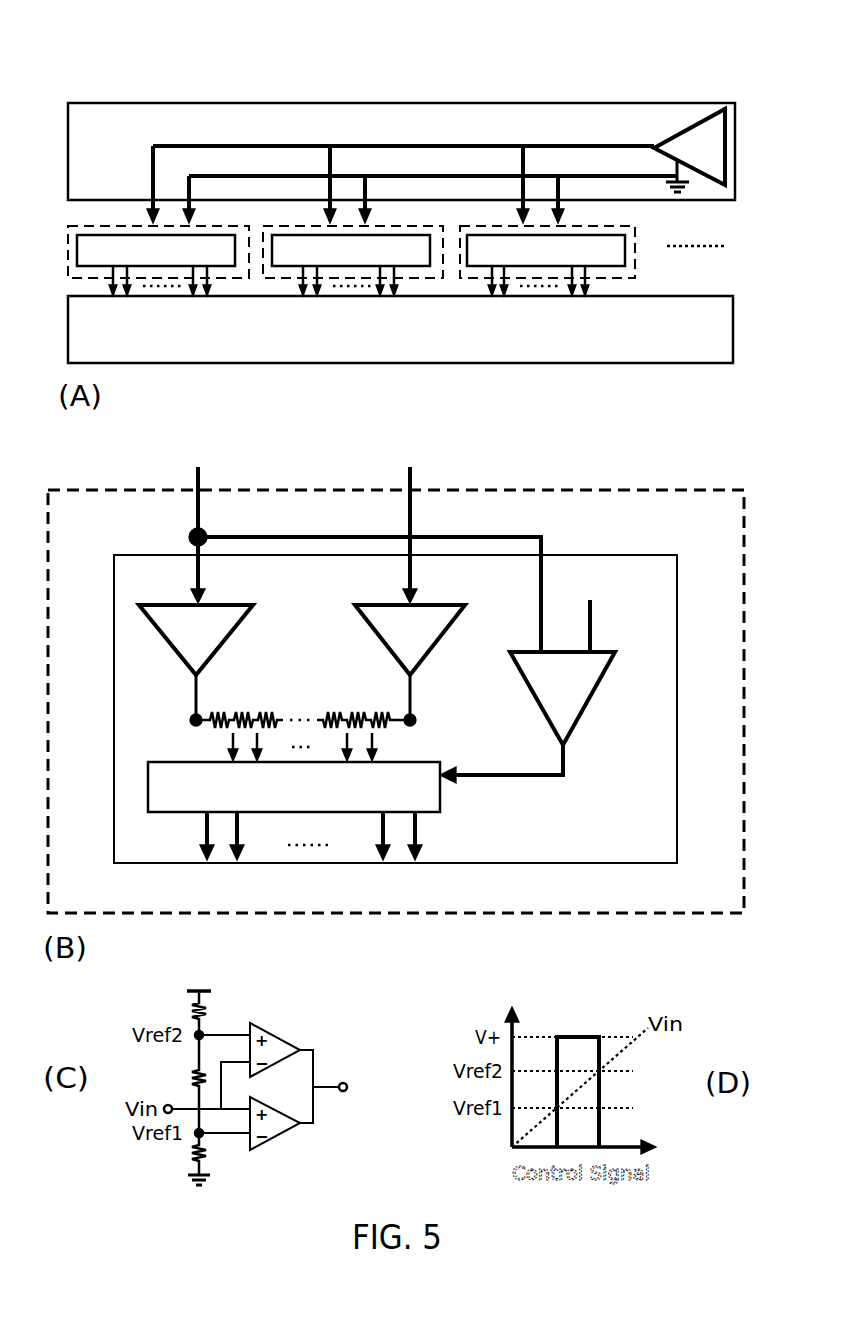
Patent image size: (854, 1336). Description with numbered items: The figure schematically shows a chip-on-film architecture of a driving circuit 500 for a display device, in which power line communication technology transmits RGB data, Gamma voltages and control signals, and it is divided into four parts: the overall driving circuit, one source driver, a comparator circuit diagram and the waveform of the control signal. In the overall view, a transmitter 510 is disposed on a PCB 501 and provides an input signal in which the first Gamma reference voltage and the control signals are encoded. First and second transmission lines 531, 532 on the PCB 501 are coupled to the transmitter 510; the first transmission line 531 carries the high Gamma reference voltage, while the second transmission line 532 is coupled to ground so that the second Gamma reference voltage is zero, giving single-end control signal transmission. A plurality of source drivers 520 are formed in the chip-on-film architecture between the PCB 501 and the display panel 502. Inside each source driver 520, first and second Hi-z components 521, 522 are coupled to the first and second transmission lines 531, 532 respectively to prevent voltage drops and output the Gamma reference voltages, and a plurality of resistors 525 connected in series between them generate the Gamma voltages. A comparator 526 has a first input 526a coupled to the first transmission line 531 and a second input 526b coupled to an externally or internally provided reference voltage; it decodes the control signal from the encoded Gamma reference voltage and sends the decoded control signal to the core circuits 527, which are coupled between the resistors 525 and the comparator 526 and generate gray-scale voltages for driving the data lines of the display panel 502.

The driving circuit 500 is at (441, 65).
The PCB 501 is at (123, 190).
The display panel 502 is at (116, 327).
The transmitter 510 is at (680, 137).
The source driver 520 is at (222, 255).
The first Hi-z component 521 is at (197, 648).
The second Hi-z component 522 is at (393, 640).
The resistors 525 is at (181, 723).
The comparator 526 is at (559, 619).
The first input 526a is at (544, 577).
The second input 526b is at (593, 612).
The core circuits 527 is at (195, 792).
The first transmission line 531 is at (185, 146).
The second transmission line 532 is at (242, 176).